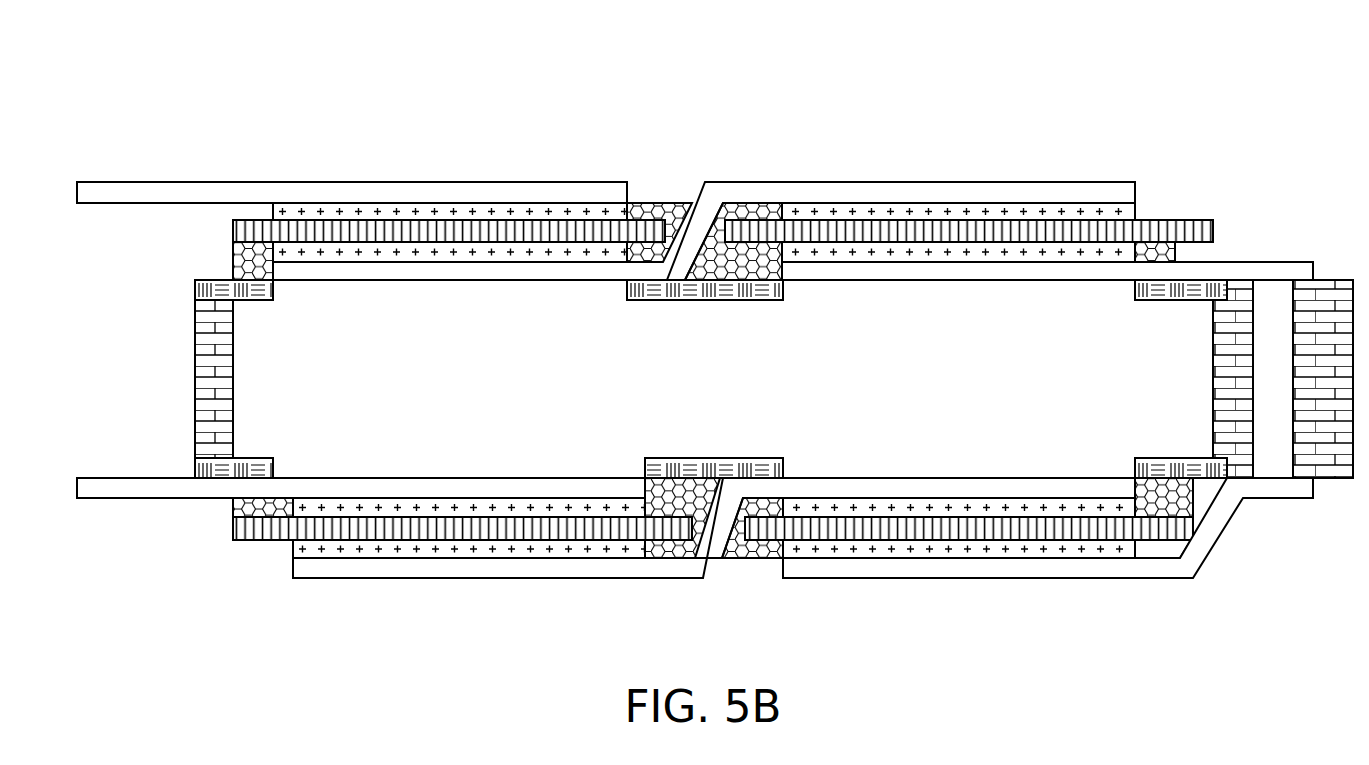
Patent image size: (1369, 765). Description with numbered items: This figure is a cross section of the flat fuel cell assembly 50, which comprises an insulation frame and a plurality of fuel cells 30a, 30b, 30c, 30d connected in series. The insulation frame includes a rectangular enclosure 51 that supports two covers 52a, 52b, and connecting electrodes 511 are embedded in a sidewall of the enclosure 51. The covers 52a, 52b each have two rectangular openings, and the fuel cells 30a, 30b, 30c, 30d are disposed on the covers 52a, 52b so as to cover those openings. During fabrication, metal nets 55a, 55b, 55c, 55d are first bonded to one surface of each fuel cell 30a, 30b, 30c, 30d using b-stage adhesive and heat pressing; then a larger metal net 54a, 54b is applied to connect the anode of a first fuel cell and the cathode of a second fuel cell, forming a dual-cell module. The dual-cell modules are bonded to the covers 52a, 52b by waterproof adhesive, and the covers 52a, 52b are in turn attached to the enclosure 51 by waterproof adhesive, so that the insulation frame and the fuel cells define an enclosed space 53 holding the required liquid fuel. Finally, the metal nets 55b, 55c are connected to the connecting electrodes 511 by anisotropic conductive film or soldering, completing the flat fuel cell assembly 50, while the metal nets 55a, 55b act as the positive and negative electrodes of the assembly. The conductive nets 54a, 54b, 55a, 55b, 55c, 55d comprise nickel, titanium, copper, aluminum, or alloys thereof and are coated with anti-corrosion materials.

The flat fuel cell assembly 50 is at (94, 73).
The enclosure 51 is at (1337, 290).
The connecting electrodes 511 is at (1280, 290).
The cover 52a is at (1201, 290).
The cover 52b is at (1165, 527).
The enclosed space 53 is at (255, 378).
The metal net 54a is at (688, 218).
The metal net 54b is at (721, 556).
The metal net 55a is at (134, 193).
The metal net 55b is at (1240, 270).
The metal net 55c is at (1276, 487).
The metal net 55d is at (134, 490).
The fuel cell 30a is at (464, 183).
The fuel cell 30b is at (964, 183).
The fuel cell 30c is at (965, 579).
The fuel cell 30d is at (466, 579).